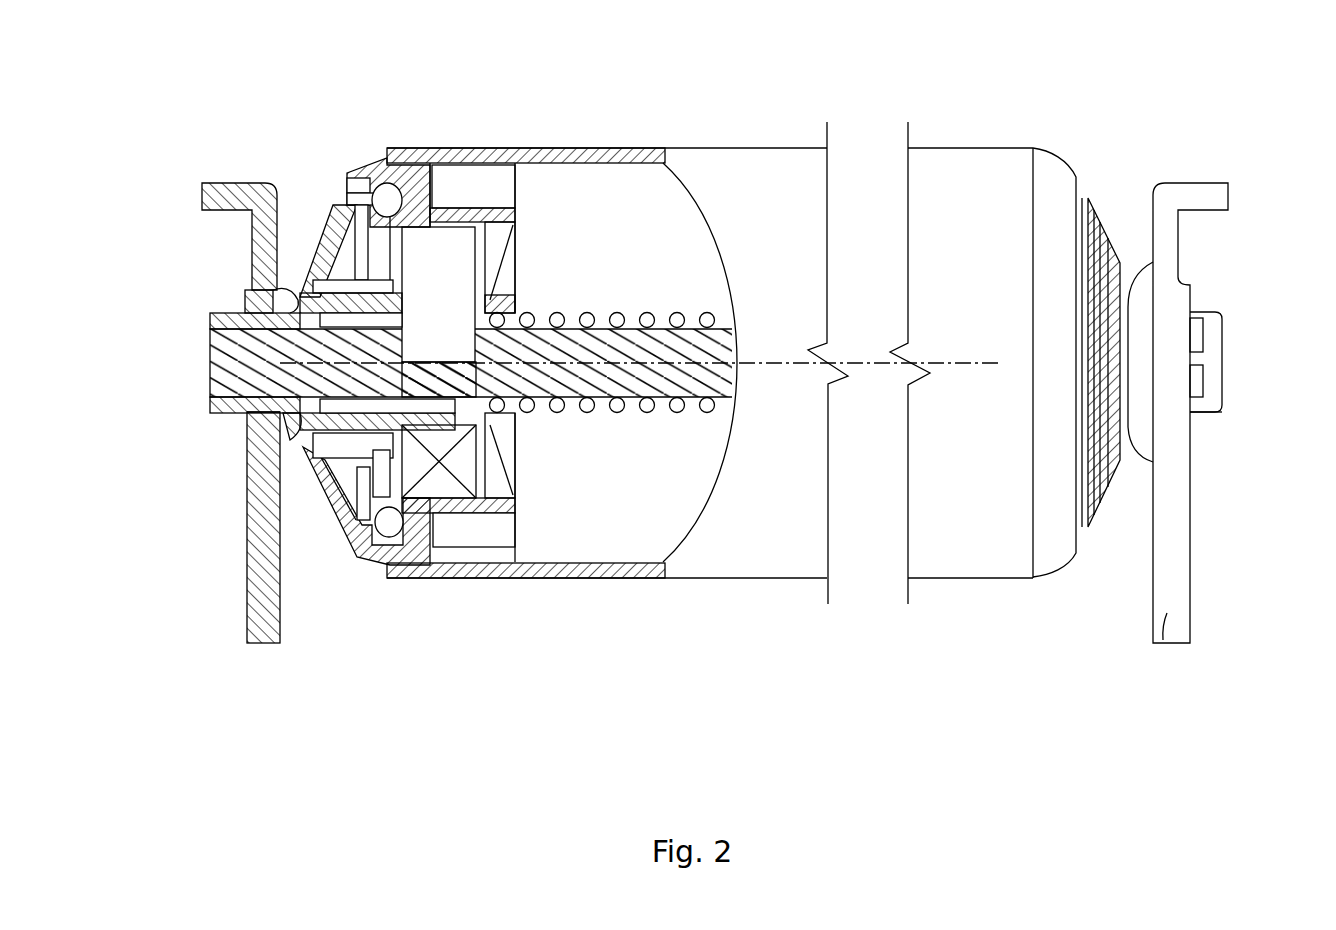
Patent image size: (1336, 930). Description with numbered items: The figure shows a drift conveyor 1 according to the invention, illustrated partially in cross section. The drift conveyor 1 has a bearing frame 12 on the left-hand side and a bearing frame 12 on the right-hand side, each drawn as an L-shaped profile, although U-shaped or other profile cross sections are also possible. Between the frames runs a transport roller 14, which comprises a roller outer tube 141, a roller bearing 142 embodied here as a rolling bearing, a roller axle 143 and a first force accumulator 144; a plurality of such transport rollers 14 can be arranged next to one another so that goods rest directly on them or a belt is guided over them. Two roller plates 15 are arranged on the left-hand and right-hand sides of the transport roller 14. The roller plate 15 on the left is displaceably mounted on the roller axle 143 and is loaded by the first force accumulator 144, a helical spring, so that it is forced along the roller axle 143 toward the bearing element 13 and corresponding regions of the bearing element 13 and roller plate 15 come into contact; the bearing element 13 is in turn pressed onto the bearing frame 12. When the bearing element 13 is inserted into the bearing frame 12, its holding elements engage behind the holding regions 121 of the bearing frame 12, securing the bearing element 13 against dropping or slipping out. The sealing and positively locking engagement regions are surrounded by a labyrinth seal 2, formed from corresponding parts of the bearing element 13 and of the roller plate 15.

The drift conveyor 1 is at (622, 72).
The labyrinth seal 2 is at (250, 289).
The bearing frame 12 is at (270, 643).
The bearing element 13 is at (248, 413).
The transport roller 14 is at (817, 628).
The roller plate 15 is at (330, 203).
The holding region 121 is at (248, 455).
The roller outer tube 141 is at (481, 562).
The roller bearing 142 is at (468, 470).
The roller axle 143 is at (562, 375).
The first force accumulator 144 is at (638, 402).